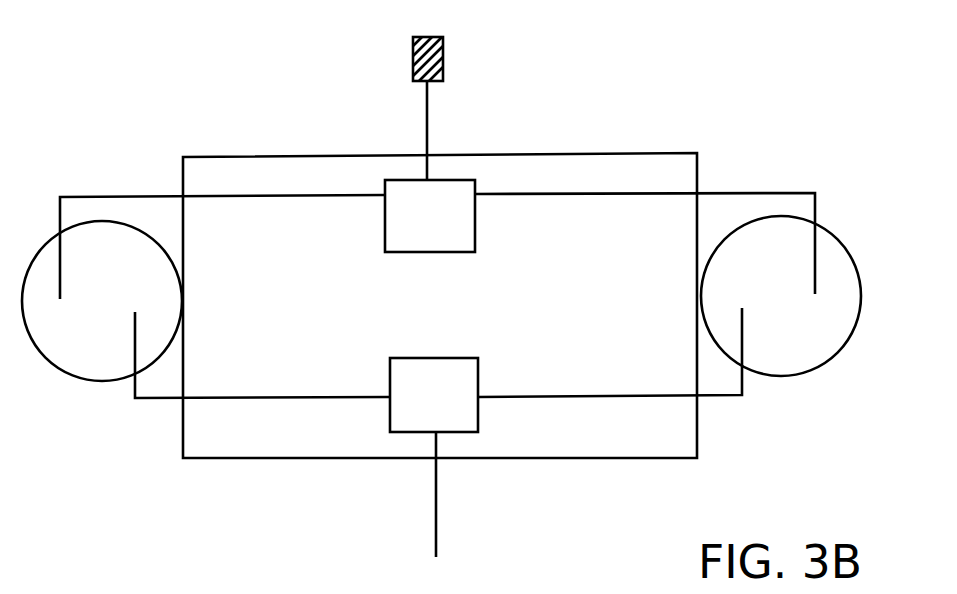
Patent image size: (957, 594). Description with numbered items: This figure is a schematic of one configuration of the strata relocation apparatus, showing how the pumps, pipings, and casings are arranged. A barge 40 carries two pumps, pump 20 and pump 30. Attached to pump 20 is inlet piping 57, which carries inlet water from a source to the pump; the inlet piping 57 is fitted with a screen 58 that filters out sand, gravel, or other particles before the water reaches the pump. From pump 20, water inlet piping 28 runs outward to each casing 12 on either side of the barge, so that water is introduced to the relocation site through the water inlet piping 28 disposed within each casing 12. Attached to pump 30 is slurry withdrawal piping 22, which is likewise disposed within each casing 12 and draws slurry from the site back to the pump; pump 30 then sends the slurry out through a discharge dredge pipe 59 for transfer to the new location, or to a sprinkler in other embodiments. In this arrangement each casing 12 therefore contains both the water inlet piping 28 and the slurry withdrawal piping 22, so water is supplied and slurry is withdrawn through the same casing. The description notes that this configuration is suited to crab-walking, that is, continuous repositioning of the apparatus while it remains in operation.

The casing 12 is at (100, 381).
The pump 20 is at (430, 216).
The slurry withdrawal piping 22 is at (307, 396).
The water inlet piping 28 is at (322, 199).
The pump 30 is at (434, 395).
The barge 40 is at (283, 155).
The inlet piping 57 is at (425, 125).
The screen 58 is at (443, 55).
The discharge dredge pipe 59 is at (437, 532).